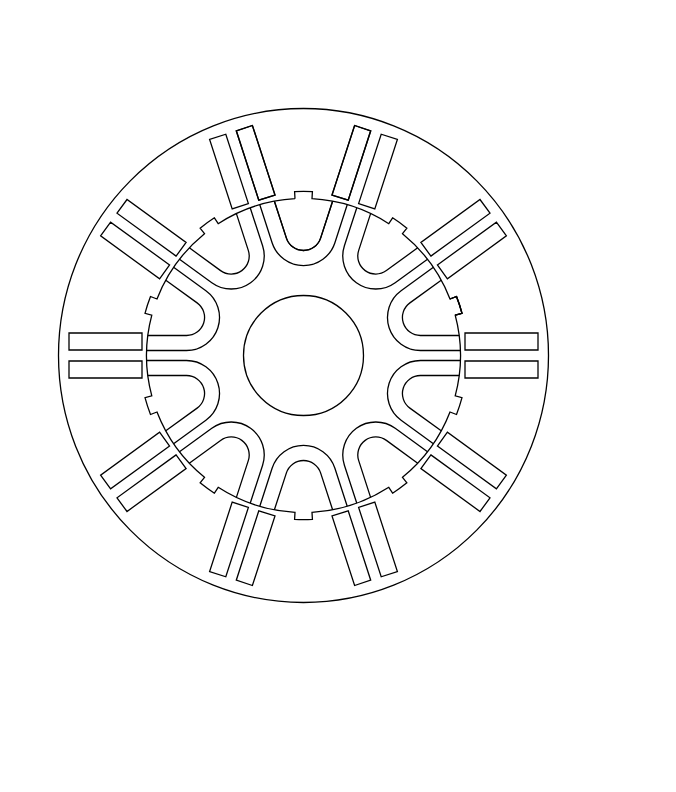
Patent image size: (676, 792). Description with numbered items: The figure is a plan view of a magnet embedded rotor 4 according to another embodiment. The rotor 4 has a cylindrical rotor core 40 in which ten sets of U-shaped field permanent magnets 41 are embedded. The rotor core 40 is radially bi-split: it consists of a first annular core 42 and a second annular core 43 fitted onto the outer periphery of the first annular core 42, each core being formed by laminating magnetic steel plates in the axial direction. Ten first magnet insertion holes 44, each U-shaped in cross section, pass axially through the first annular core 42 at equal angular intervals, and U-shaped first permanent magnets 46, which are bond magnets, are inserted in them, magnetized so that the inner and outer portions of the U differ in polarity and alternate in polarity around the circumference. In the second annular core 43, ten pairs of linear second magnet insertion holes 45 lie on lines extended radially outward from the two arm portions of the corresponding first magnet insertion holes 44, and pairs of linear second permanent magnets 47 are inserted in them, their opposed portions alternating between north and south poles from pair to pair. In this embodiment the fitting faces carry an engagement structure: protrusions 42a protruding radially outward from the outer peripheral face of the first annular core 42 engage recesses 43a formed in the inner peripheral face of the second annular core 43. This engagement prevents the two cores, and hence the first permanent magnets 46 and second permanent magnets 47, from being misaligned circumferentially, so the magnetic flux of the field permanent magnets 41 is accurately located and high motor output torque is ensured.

The rotor 4 is at (541, 106).
The rotor core 40 is at (533, 156).
The field permanent magnets 41 is at (262, 59).
The first annular core 42 is at (392, 207).
The protrusions 42a is at (463, 305).
The second annular core 43 is at (518, 264).
The recesses 43a is at (447, 303).
The first magnet insertion holes 44 is at (317, 251).
The second magnet insertion holes 45 is at (242, 128).
The first permanent magnets 46 is at (323, 217).
The second permanent magnets 47 is at (250, 146).